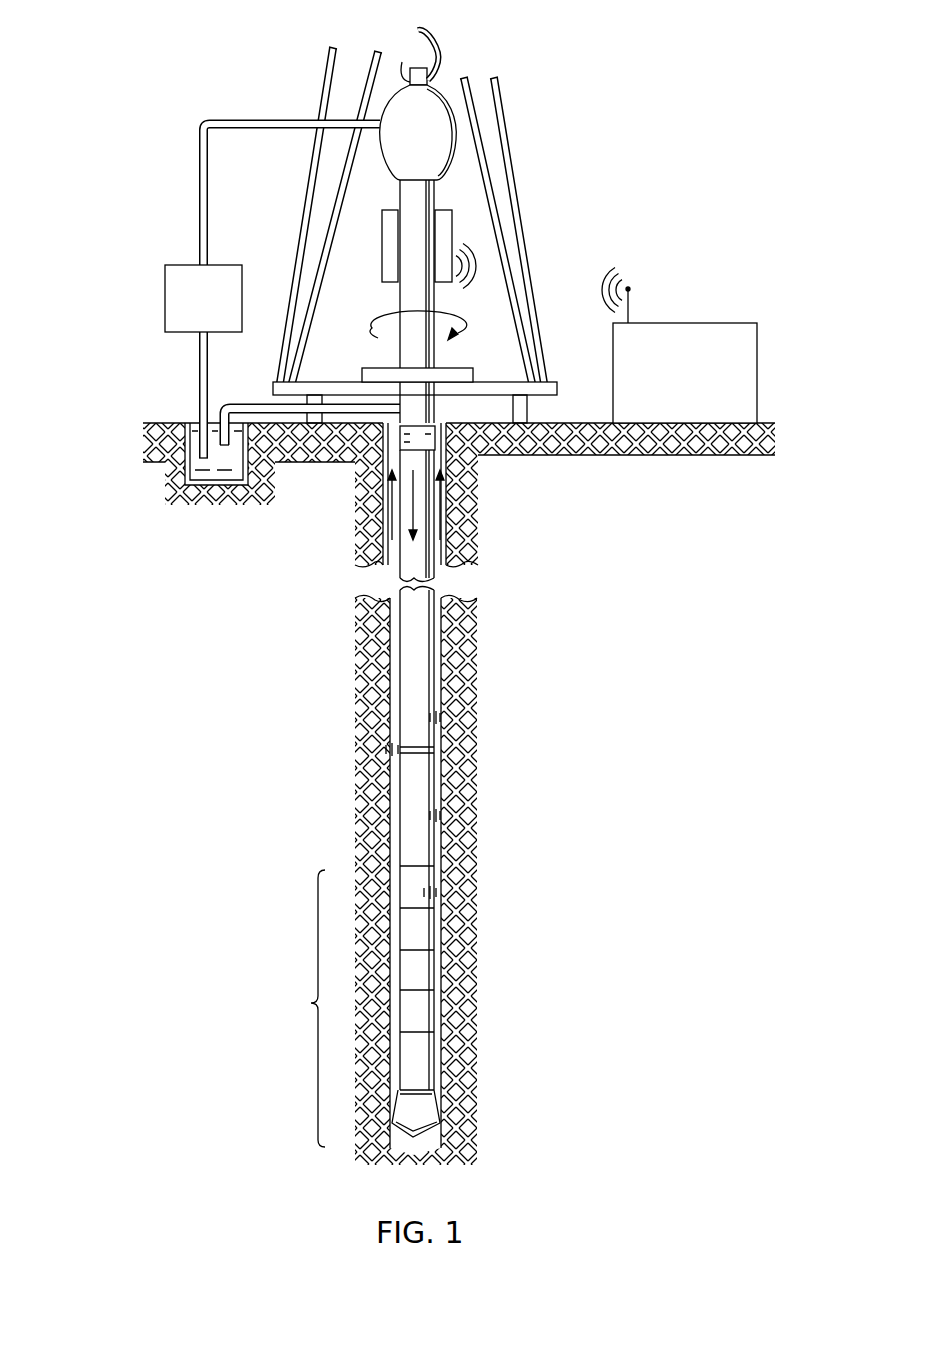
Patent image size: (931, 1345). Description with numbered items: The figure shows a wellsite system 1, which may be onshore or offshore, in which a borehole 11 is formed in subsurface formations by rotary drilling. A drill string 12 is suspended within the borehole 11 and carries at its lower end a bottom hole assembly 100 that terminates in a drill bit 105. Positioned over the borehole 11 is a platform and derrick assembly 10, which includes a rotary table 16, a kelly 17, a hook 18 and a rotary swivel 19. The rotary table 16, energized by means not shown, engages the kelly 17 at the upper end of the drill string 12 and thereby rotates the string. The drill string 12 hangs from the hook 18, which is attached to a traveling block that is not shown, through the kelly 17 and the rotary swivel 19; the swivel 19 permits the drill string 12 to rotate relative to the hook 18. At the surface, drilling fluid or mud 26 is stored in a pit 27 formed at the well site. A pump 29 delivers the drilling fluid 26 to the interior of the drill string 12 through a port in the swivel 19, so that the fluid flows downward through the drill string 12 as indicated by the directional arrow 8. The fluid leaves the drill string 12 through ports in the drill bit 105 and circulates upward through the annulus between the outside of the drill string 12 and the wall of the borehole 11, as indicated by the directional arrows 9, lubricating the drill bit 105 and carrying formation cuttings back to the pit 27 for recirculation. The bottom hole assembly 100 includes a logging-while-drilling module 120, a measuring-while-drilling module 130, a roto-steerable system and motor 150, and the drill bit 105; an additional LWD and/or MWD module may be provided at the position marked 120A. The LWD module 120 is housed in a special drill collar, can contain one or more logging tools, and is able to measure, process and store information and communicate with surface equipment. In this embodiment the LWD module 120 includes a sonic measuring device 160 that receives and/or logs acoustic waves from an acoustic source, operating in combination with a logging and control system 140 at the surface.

The wellsite system 1 is at (168, 52).
The platform and derrick assembly 10 is at (538, 115).
The hook 18 is at (415, 30).
The rotary swivel 19 is at (405, 167).
The kelly 17 is at (412, 355).
The drill string 12 is at (417, 423).
The rotary table 16 is at (453, 373).
The borehole 11 is at (445, 427).
The pump 29 is at (185, 333).
The pit 27 is at (190, 425).
The drilling fluid 26 is at (220, 488).
The directional arrows 9 is at (392, 495).
The directional arrow 8 is at (410, 503).
The logging and control system 140 is at (702, 322).
The bottom hole assembly 100 is at (312, 1003).
The sonic measuring device 160 is at (420, 886).
The logging-while-drilling module 120 is at (422, 928).
The measuring-while-drilling module 130 is at (423, 975).
The additional LWD and/or MWD module 120A is at (422, 1015).
The roto-steerable system and motor 150 is at (422, 1058).
The drill bit 105 is at (418, 1108).